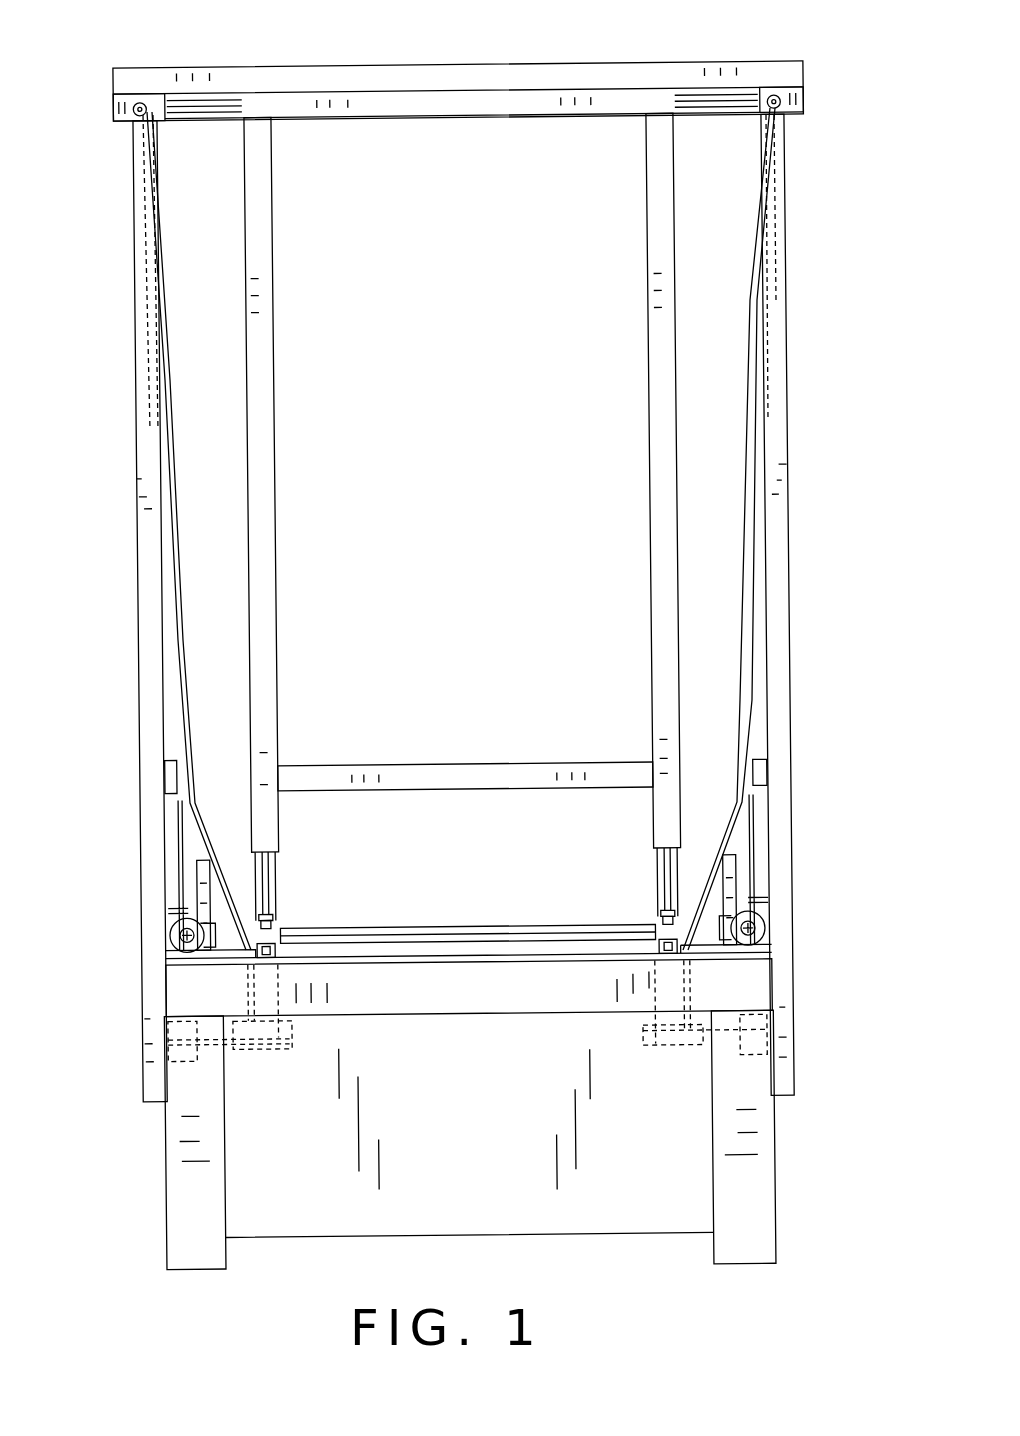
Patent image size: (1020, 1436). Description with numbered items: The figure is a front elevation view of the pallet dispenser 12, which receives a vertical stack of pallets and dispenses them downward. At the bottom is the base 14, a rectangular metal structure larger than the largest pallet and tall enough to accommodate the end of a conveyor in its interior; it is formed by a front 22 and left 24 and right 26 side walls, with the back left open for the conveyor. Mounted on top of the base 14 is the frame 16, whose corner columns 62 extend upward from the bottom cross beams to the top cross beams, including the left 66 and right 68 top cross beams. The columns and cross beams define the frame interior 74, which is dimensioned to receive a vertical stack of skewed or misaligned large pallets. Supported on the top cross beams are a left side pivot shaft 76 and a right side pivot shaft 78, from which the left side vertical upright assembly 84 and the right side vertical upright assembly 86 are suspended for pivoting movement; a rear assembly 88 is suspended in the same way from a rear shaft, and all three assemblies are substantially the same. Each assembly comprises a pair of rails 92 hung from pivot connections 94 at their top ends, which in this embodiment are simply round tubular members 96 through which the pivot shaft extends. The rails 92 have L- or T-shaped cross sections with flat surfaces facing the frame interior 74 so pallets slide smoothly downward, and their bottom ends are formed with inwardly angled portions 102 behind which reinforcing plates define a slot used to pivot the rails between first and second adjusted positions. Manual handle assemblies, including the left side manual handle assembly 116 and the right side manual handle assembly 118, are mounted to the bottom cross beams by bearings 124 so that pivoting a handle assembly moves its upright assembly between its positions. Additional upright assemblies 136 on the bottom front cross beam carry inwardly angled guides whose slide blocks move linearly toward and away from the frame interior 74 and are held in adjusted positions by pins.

The pallet dispenser 12 is at (770, 40).
The base 14 is at (675, 1180).
The frame 16 is at (818, 433).
The front wall 22 is at (600, 1243).
The left side wall 24 is at (162, 1162).
The right side wall 26 is at (775, 1148).
The columns 62 is at (150, 665).
The left top cross beam 66 is at (113, 78).
The right top cross beam 68 is at (803, 74).
The frame interior 74 is at (486, 446).
The left side pivot shaft 76 is at (133, 113).
The right side pivot shaft 78 is at (785, 103).
The left side vertical upright assembly 84 is at (198, 588).
The right side vertical upright assembly 86 is at (738, 648).
The rear vertical upright assembly 88 is at (285, 619).
The rails 92 is at (743, 552).
The pivot connections 94 is at (138, 97).
The round tubular member 96 is at (441, 100).
The inwardly angled portions 102 is at (215, 857).
The left side manual handle assembly 116 is at (176, 905).
The right side manual handle assembly 118 is at (761, 890).
The bearings 124 is at (178, 945).
The additional upright assemblies 136 is at (282, 885).